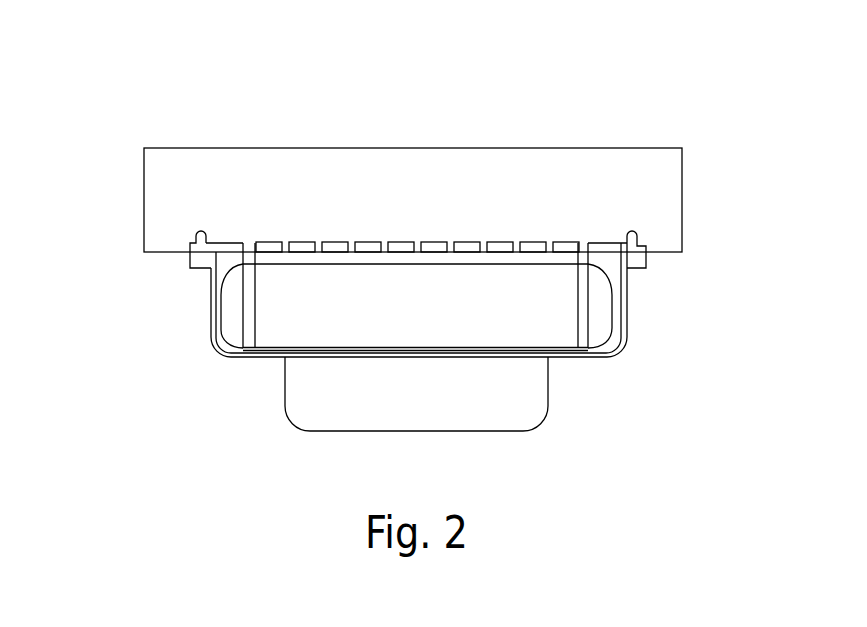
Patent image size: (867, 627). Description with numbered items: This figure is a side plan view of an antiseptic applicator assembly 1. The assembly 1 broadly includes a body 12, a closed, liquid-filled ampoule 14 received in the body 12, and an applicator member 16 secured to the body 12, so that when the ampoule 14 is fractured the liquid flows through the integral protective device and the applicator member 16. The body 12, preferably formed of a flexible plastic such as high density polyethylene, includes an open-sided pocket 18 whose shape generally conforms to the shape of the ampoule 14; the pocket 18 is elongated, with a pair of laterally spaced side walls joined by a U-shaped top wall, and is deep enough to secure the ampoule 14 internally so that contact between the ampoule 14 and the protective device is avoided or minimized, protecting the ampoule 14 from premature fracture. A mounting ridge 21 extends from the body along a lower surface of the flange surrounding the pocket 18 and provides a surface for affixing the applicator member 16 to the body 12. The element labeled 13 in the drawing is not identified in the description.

The antiseptic applicator assembly 1 is at (233, 115).
The body 12 is at (627, 257).
The left mounting bracket 13 is at (219, 245).
The ampoule 14 is at (513, 331).
The applicator member 16 is at (510, 175).
The pocket 18 is at (225, 273).
The mounting ridge 21 is at (637, 235).